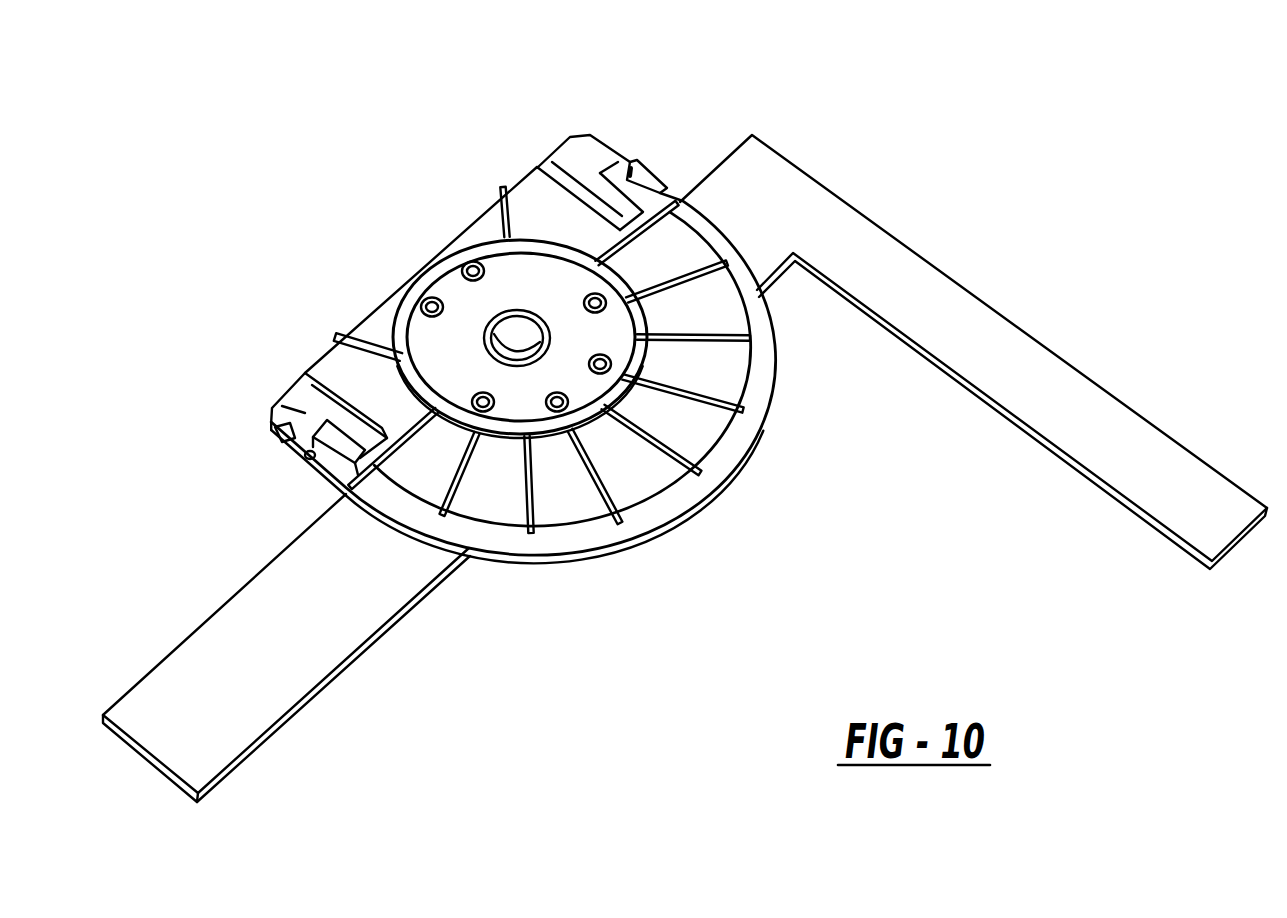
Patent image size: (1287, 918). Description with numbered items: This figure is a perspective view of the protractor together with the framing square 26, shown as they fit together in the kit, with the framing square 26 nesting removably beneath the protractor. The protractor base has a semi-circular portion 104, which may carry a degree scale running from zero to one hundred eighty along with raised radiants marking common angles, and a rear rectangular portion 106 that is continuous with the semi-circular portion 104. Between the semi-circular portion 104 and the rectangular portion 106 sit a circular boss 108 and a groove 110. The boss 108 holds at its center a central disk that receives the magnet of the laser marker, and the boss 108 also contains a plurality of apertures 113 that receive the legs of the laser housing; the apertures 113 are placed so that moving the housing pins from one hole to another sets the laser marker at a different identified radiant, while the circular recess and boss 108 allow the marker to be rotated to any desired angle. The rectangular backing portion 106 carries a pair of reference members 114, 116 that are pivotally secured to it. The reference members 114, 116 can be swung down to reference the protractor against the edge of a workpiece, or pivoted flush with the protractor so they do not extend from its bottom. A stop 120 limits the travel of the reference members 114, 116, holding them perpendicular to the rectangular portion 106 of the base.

The framing square 26 is at (360, 608).
The semi-circular portion 104 is at (673, 530).
The rear rectangular portion 106 is at (520, 177).
The circular boss 108 is at (440, 343).
The groove 110 is at (400, 360).
The apertures 113 is at (603, 372).
The reference member 114 is at (282, 406).
The reference member 116 is at (577, 160).
The stop 120 is at (660, 163).